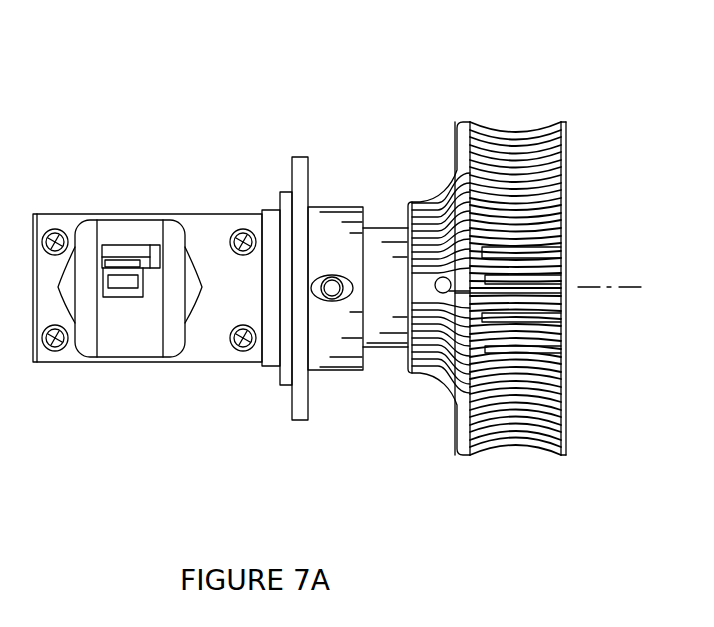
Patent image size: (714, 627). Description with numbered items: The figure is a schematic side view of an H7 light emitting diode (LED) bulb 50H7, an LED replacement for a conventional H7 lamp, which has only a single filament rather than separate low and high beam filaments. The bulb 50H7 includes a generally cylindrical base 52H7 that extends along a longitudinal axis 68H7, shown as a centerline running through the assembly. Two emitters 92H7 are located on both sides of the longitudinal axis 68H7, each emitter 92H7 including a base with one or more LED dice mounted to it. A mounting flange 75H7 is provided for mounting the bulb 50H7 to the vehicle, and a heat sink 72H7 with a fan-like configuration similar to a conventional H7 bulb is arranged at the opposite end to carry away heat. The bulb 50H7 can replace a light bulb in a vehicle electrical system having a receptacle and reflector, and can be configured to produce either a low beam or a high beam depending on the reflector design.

The H7 light emitting diode (LED) bulb 50H7 is at (530, 84).
The generally cylindrical base 52H7 is at (193, 353).
The emitter 92H7 is at (120, 258).
The mounting flange 75H7 is at (300, 417).
The heat sink 72H7 is at (553, 412).
The longitudinal axis 68H7 is at (608, 288).